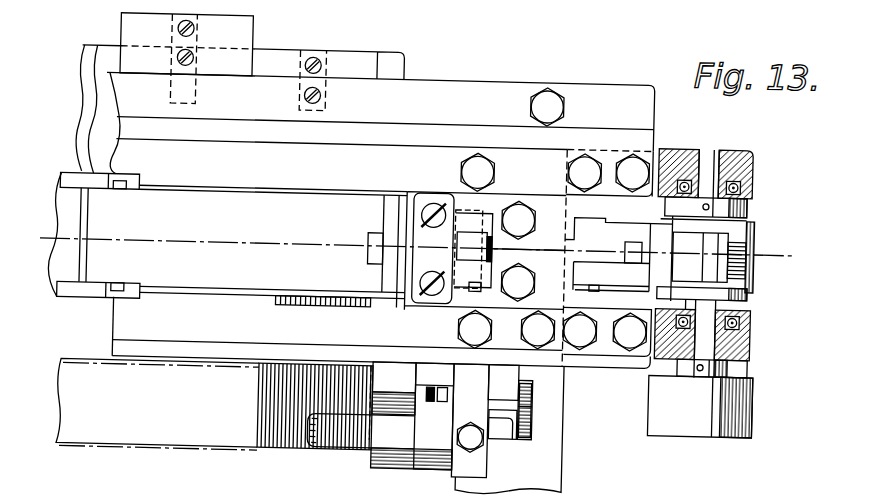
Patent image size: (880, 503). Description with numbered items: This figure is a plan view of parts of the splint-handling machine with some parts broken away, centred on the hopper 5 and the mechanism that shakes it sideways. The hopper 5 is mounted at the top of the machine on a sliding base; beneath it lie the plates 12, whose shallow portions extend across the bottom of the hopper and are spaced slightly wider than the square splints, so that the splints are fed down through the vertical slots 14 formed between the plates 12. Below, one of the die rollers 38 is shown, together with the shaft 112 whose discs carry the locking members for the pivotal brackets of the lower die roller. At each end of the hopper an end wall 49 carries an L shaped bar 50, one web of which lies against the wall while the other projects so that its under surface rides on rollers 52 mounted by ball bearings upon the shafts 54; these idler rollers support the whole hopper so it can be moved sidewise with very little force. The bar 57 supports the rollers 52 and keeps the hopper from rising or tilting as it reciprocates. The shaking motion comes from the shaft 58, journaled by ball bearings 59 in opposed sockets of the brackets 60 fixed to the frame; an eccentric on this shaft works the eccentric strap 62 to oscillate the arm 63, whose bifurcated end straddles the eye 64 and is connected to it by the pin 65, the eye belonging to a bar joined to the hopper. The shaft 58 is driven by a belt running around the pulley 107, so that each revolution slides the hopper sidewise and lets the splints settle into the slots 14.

The hopper 5 is at (364, 190).
The plates 12 is at (278, 288).
The vertical slots 14 is at (40, 230).
The die roller 38 is at (290, 448).
The end walls 49 is at (392, 208).
The L shaped bar 50 is at (405, 293).
The rollers 52 is at (440, 238).
The shafts 54 is at (474, 281).
The bar 57 is at (510, 250).
The shaft 58 is at (699, 330).
The ball bearings 59 is at (747, 171).
The brackets 60 is at (737, 131).
The eccentric strap 62 is at (749, 216).
The arm 63 is at (618, 254).
The eye 64 is at (614, 251).
The pin 65 is at (598, 276).
The pulley 107 is at (699, 407).
The shaft 112 is at (361, 431).